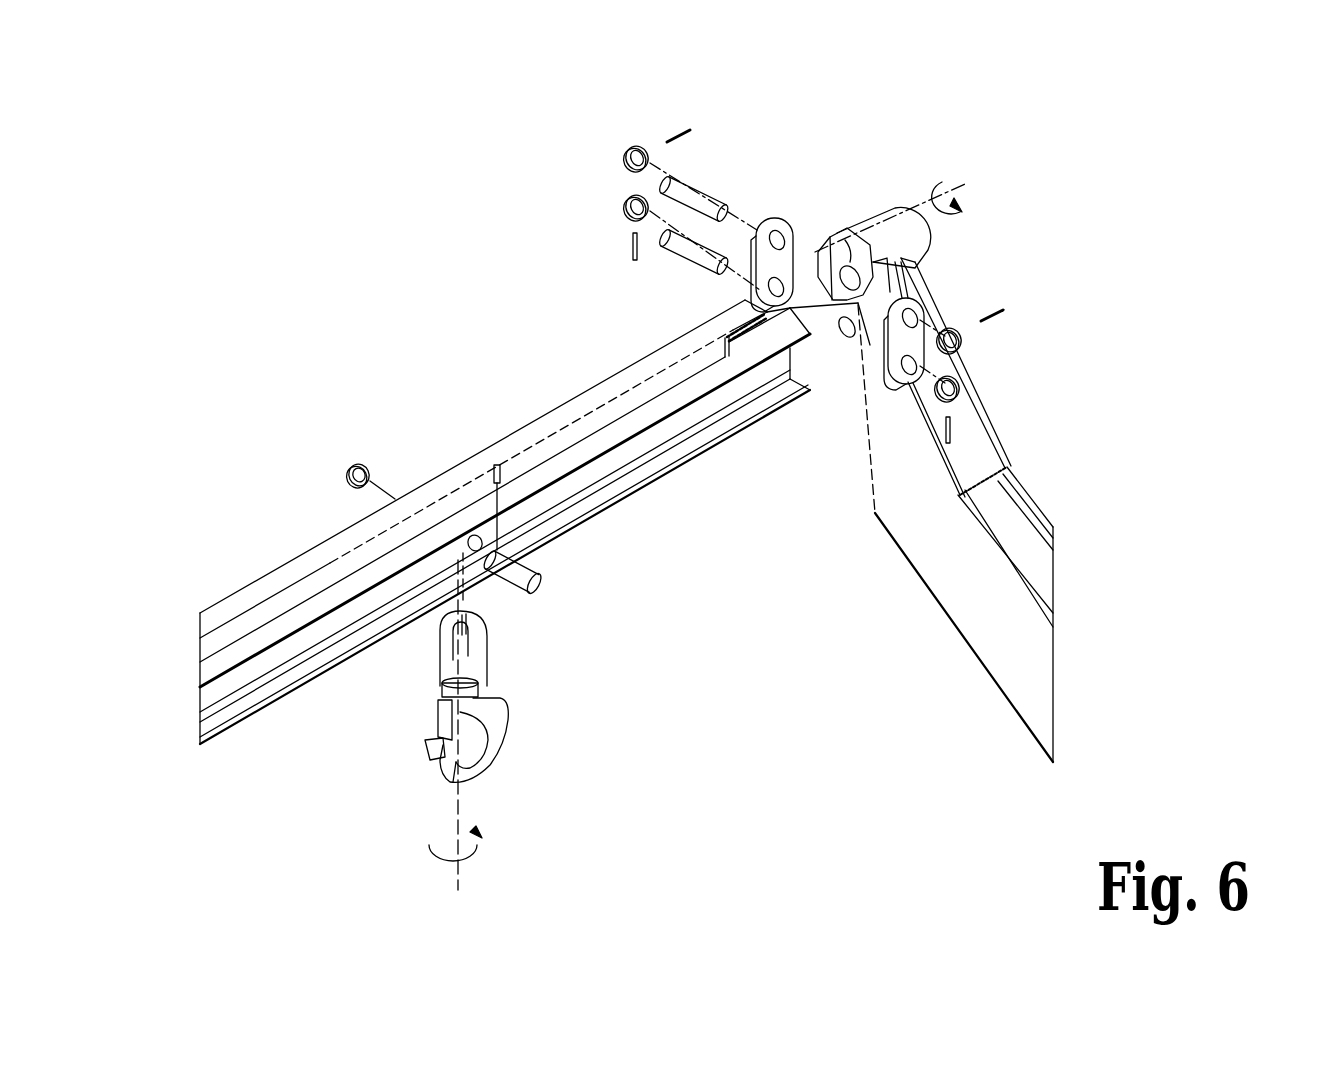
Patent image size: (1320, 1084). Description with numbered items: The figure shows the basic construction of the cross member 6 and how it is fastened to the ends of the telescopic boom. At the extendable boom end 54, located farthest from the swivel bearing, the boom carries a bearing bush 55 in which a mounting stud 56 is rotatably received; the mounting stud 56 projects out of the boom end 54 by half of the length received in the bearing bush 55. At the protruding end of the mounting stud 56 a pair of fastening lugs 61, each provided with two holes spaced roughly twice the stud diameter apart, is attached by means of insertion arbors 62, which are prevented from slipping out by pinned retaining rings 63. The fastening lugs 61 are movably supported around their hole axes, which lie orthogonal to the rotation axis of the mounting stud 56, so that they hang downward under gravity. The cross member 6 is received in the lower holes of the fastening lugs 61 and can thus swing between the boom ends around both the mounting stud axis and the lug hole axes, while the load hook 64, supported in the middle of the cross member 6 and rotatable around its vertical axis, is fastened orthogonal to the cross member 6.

The cross member 6 is at (335, 532).
The boom end 54 is at (1020, 477).
The bearing bush 55 is at (930, 243).
The mounting stud 56 is at (855, 278).
The fastening lug 61 is at (899, 292).
The insertion arbor 62 is at (697, 226).
The retaining ring 63 is at (624, 193).
The load hook 64 is at (500, 746).